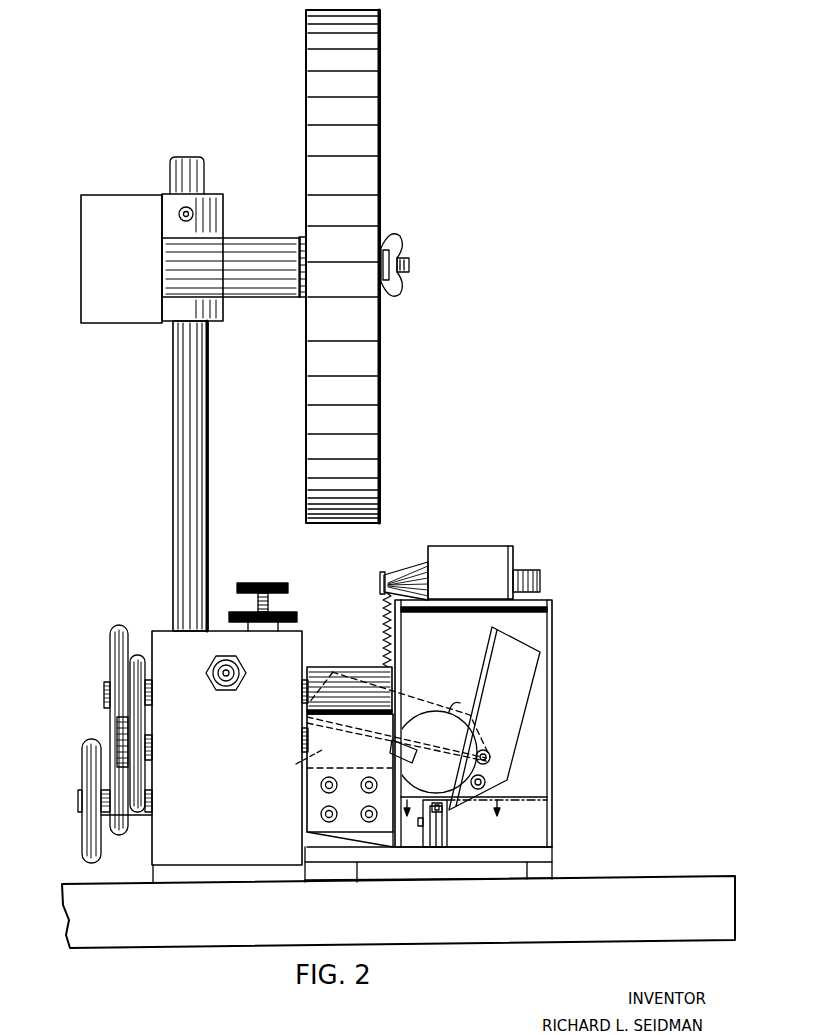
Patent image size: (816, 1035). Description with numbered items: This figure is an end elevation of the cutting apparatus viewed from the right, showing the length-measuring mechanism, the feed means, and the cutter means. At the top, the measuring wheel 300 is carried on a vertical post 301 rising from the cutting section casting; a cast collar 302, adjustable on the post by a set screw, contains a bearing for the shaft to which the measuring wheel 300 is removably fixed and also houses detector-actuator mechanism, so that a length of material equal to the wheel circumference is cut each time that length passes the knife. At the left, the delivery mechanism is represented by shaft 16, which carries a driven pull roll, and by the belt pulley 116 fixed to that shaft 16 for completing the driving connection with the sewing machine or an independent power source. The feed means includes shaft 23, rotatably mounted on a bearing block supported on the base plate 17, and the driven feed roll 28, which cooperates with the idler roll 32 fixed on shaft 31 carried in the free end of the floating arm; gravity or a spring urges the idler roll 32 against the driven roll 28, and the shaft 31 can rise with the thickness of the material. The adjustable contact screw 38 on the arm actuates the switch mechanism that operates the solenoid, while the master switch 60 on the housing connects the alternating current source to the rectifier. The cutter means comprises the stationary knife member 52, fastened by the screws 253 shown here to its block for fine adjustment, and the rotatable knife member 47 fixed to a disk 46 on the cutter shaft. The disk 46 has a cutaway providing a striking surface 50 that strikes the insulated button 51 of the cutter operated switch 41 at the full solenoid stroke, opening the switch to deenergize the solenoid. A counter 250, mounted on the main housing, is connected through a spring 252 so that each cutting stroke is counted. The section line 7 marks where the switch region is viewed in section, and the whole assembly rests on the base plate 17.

The measuring wheel 300 is at (380, 112).
The cast collar 302 is at (223, 212).
The vertical post 301 is at (206, 447).
The adjustable contact screw 38 is at (261, 580).
The master switch 60 is at (208, 663).
The shaft 31 is at (301, 691).
The shaft 23 is at (301, 737).
The driven feed roll 28 is at (296, 764).
The stationary knife member 52 is at (316, 797).
The screws 253 is at (369, 777).
The idler roll 32 is at (355, 668).
The spring 252 is at (386, 608).
The counter 250 is at (487, 583).
The disk 46 is at (449, 712).
The rotatable knife member 47 is at (533, 650).
The striking surface 50 is at (413, 744).
The section line 7- 7 is at (452, 819).
The cutter operated switch 41 is at (453, 834).
The insulated button 51 is at (437, 849).
The base plate 17 is at (566, 878).
The shaft 16 is at (80, 802).
The belt pulley 116 is at (82, 758).